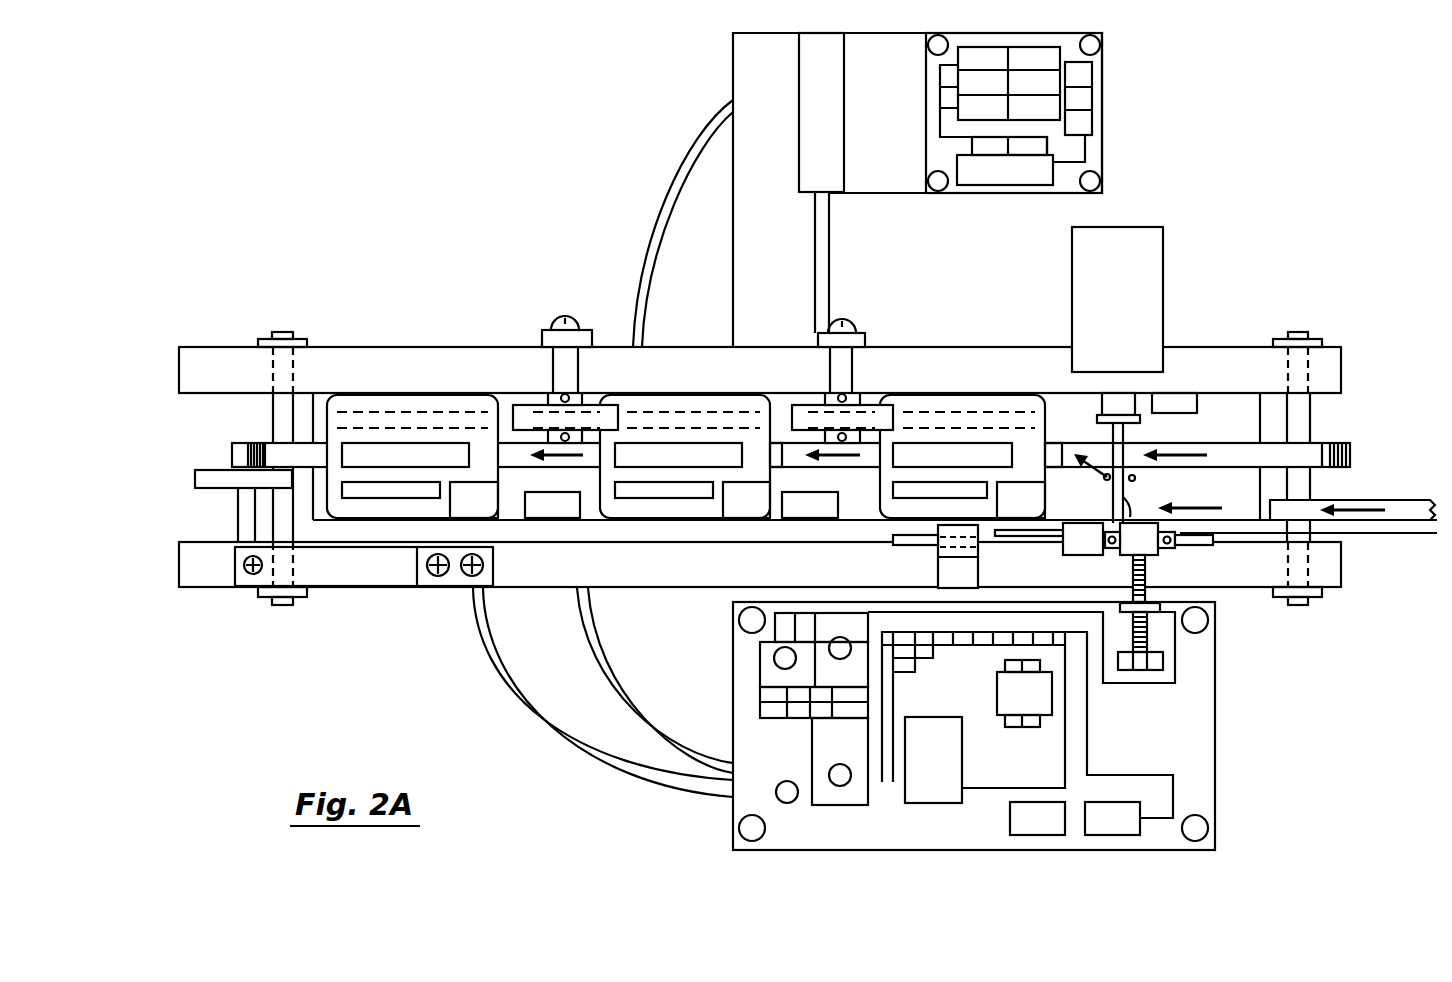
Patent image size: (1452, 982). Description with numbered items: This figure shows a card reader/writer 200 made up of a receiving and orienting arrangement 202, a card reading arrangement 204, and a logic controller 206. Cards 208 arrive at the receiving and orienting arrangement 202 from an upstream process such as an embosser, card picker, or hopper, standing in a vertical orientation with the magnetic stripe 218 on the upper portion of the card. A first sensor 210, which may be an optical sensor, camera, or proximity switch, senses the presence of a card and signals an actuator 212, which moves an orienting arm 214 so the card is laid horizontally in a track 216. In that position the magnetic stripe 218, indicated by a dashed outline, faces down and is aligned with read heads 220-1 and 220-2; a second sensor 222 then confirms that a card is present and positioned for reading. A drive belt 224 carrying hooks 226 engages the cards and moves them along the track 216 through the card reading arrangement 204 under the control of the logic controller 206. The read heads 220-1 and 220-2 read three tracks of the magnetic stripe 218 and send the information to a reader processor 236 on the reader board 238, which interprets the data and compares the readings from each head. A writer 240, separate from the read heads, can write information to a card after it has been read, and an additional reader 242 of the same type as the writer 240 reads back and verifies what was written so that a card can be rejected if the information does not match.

The card reader/writer 200 is at (392, 198).
The receiving and orienting arrangement 202 is at (1362, 338).
The card reading arrangement 204 is at (612, 302).
The logic controller 206 is at (753, 67).
The card 208 is at (990, 400).
The first sensor 210 is at (1080, 548).
The actuator 212 is at (1140, 298).
The orienting arm 214 is at (1150, 555).
The track 216 is at (192, 414).
The magnetic stripe 218 is at (1022, 420).
The read head 220-1 is at (818, 420).
The read head 220-2 is at (540, 420).
The second sensor 222 is at (1172, 402).
The drive belt 224 is at (1352, 456).
The hook 226 is at (777, 455).
The reader processor 236 is at (1010, 695).
The reader board 238 is at (974, 754).
The writer 240 is at (802, 505).
The additional reader 242 is at (563, 505).